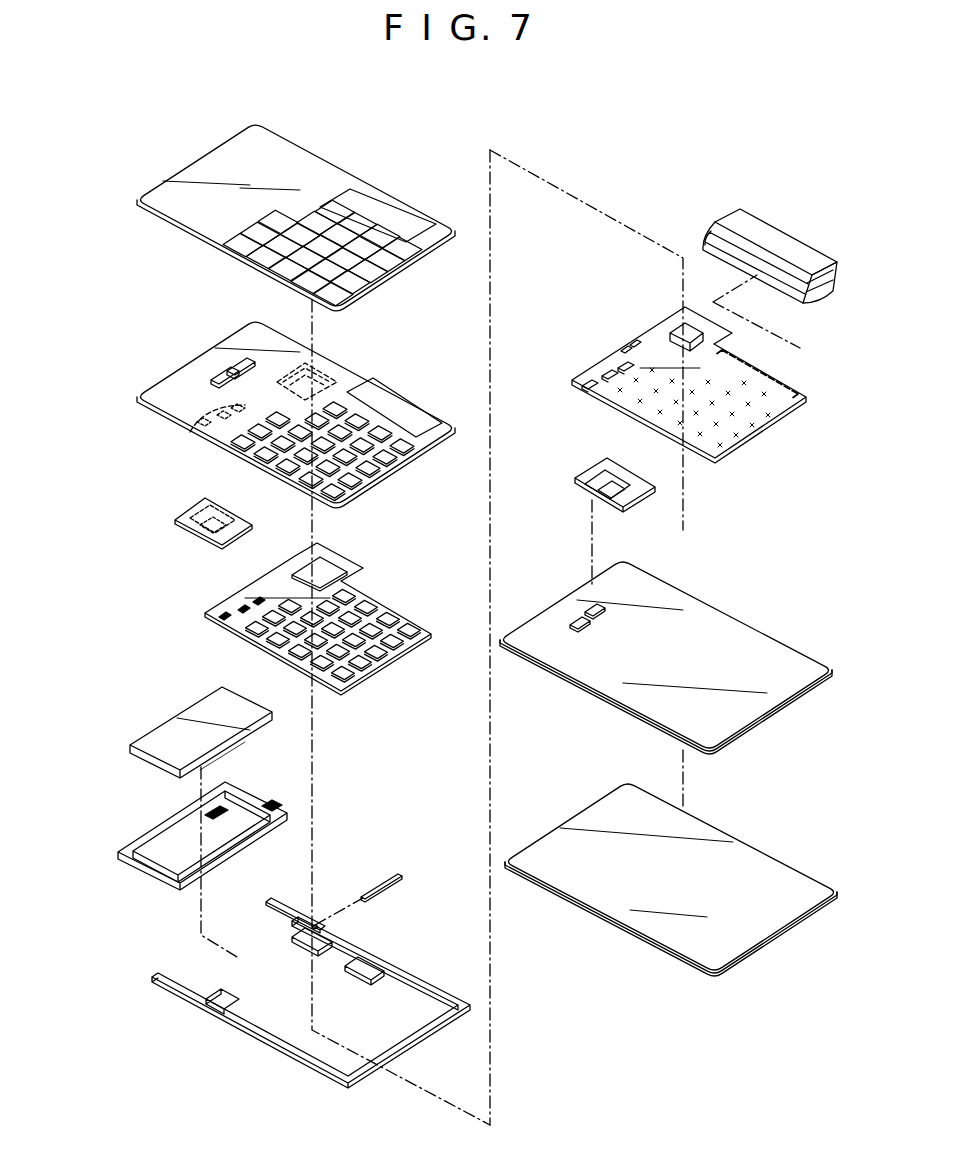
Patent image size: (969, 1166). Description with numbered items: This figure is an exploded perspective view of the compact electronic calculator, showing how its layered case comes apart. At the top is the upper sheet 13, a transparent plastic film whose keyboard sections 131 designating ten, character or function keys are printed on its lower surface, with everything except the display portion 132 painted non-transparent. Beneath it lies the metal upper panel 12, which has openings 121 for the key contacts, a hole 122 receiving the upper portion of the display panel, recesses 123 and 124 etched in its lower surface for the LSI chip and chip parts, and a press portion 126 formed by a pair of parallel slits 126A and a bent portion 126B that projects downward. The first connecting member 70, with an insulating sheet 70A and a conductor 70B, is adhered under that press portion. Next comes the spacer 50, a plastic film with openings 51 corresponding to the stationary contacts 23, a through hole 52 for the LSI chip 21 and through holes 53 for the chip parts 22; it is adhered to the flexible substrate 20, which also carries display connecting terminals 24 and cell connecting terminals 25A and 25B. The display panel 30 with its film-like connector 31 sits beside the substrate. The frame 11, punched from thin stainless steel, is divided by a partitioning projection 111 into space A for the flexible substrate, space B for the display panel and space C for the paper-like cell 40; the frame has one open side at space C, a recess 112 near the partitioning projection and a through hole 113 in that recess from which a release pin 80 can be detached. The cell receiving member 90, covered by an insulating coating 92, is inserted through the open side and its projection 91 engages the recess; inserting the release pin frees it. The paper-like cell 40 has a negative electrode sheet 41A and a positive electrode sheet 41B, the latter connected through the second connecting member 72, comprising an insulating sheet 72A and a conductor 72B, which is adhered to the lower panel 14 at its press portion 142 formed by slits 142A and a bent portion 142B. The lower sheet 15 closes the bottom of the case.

The upper sheet 13 is at (318, 172).
The display portion 132 is at (405, 218).
The keyboard sections 131 is at (395, 282).
The upper panel 12 is at (375, 382).
The hole 122 is at (415, 412).
The openings 121 is at (395, 470).
The recess 123 is at (322, 372).
The recess 124 is at (188, 433).
The press portion 126 is at (186, 346).
The slits 126A is at (240, 362).
The bent portion 126B is at (225, 370).
The first connecting member 70 is at (186, 522).
The insulating sheet 70A is at (212, 535).
The conductor 70B is at (195, 526).
The spacer 50 is at (291, 602).
The through hole 52 is at (302, 562).
The openings 51 is at (417, 620).
The through holes 53 is at (240, 610).
The paper-like cell 40 is at (213, 711).
The negative electrode sheet 41A is at (225, 697).
The positive electrode sheet 41B is at (238, 742).
The cell receiving member 90 is at (196, 819).
The projection 91 is at (272, 800).
The insulating coating 92 is at (235, 812).
The release pin 80 is at (385, 880).
The frame 11 is at (311, 986).
The partitioning projection 111 is at (240, 998).
The recess 112 is at (300, 918).
The through hole 113 is at (320, 925).
The space A is at (327, 1047).
The space B is at (413, 1003).
The space C is at (268, 940).
The display panel 30 is at (770, 249).
The film-like connector 31 is at (778, 288).
The flexible substrate 20 is at (684, 357).
The LSI chip 21 is at (706, 338).
The chip parts 22 is at (612, 375).
The stationary contacts 23 is at (770, 428).
The connecting terminals 24 is at (785, 386).
The cell connecting terminal 25A is at (633, 341).
The cell connecting terminal 25B is at (620, 350).
The second connecting member 72 is at (587, 465).
The insulating sheet 72A is at (630, 480).
The conductor 72B is at (590, 489).
The lower panel 14 is at (664, 636).
The press portion 142 is at (587, 583).
The slits 142A is at (598, 616).
The bent portion 142B is at (543, 593).
The lower sheet 15 is at (628, 912).